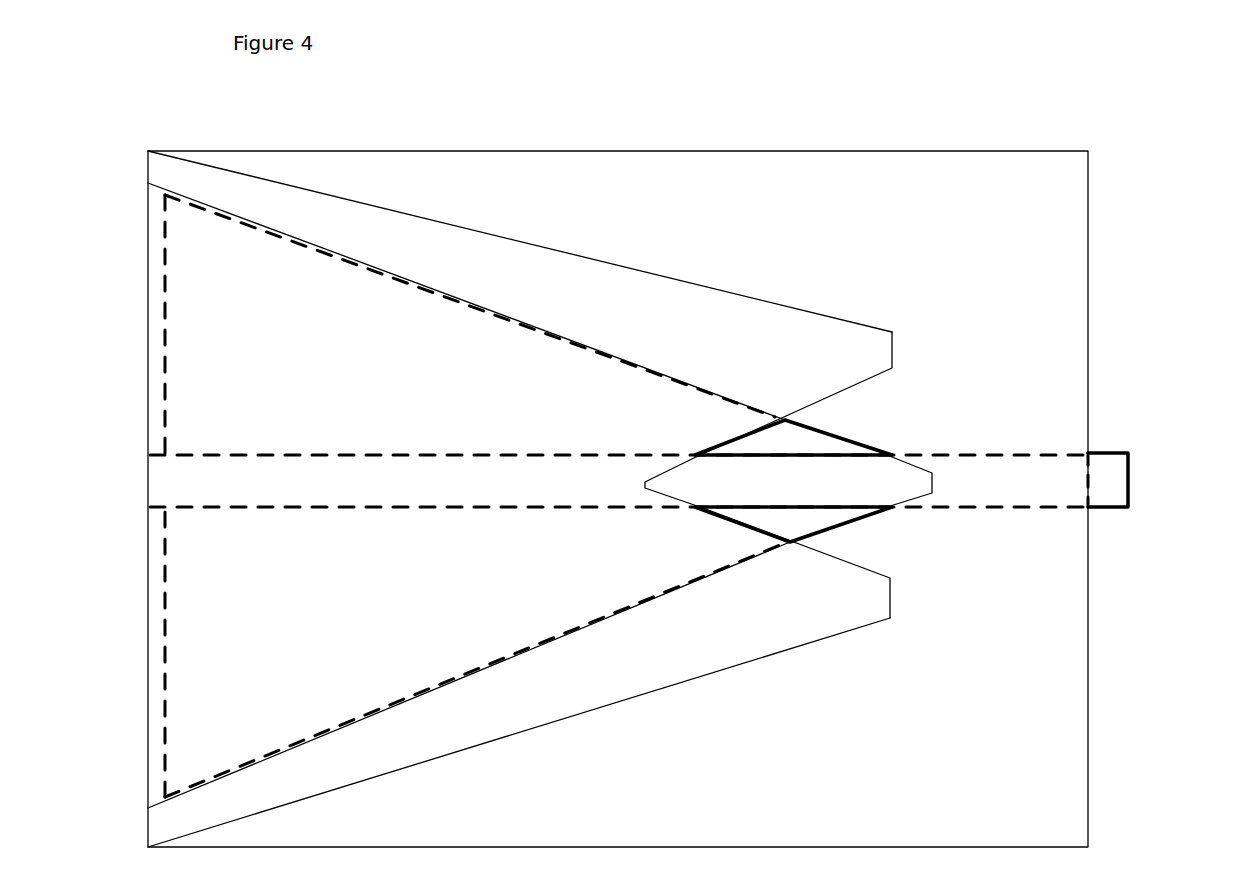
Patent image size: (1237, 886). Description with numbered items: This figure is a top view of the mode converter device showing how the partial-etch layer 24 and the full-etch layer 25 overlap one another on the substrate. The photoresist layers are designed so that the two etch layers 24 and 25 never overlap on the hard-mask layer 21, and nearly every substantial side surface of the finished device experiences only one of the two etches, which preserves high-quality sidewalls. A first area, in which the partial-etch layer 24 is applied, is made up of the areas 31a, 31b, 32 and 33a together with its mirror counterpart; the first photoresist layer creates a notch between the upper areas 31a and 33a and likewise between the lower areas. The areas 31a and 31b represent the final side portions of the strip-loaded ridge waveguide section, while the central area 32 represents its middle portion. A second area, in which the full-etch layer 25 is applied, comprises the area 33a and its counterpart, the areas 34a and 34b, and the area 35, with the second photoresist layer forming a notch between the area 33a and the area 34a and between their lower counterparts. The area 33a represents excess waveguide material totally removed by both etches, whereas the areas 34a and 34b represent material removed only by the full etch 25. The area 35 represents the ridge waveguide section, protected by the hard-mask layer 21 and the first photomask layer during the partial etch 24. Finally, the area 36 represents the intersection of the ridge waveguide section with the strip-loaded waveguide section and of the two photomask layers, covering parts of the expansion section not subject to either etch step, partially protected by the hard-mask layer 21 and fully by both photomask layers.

The hard-mask layer 21 is at (1117, 465).
The partial-etch layer 24 is at (448, 253).
The full-etch layer 25 is at (823, 187).
The first area portion representing final side portion 31a is at (332, 372).
The first area portion representing final side portion 31b is at (309, 613).
The middle portion area 32 is at (361, 494).
The excess waveguide material area 33a is at (781, 361).
The full-etch removed area 34a is at (978, 251).
The full-etch removed area 34b is at (984, 719).
The ridge waveguide section area 35 is at (1018, 494).
The intersection area 36 is at (806, 494).